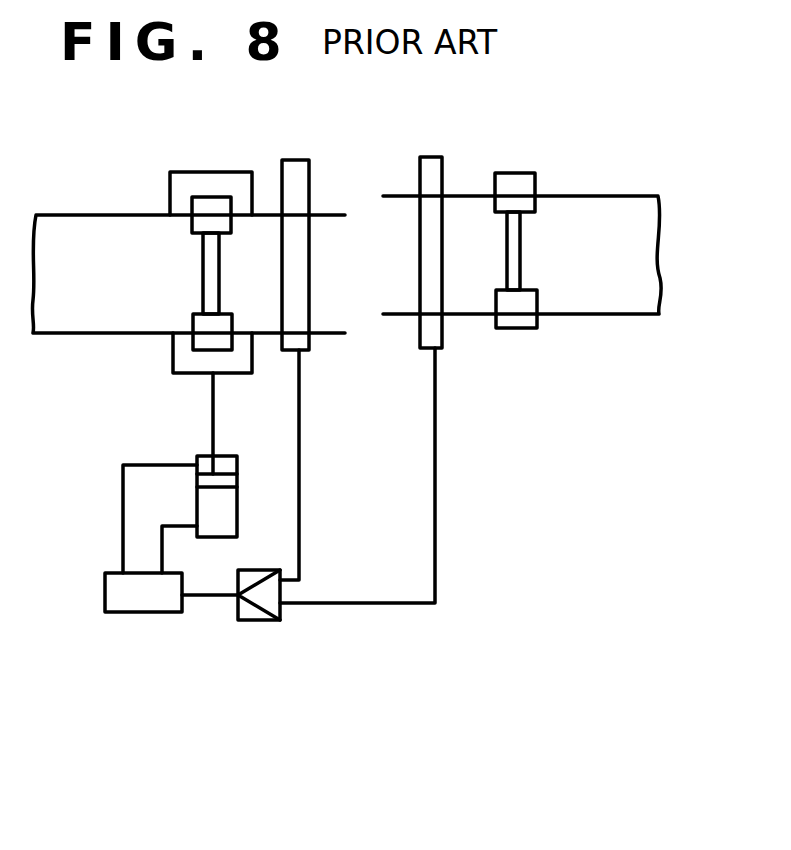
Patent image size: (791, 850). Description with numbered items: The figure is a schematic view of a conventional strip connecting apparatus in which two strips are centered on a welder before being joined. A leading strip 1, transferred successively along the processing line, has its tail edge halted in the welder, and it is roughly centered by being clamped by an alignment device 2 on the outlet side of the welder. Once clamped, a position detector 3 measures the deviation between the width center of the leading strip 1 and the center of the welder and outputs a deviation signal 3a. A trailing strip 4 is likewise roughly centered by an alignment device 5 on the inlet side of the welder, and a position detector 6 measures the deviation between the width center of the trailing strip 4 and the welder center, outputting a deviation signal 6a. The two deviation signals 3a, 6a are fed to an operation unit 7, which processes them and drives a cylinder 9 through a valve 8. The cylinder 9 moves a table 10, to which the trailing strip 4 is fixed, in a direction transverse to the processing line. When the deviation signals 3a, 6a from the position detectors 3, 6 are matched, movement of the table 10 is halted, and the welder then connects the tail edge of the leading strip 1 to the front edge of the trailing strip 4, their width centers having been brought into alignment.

The leading strip 1 is at (598, 196).
The alignment device 2 is at (515, 173).
The position detector 3 is at (429, 157).
The deviation signal 3a is at (435, 383).
The trailing strip 4 is at (84, 214).
The alignment device 5 is at (212, 197).
The position detector 6 is at (300, 160).
The deviation signal 6a is at (299, 375).
The operation unit 7 is at (258, 620).
The valve 8 is at (128, 612).
The cylinder 9 is at (205, 456).
The table 10 is at (183, 172).